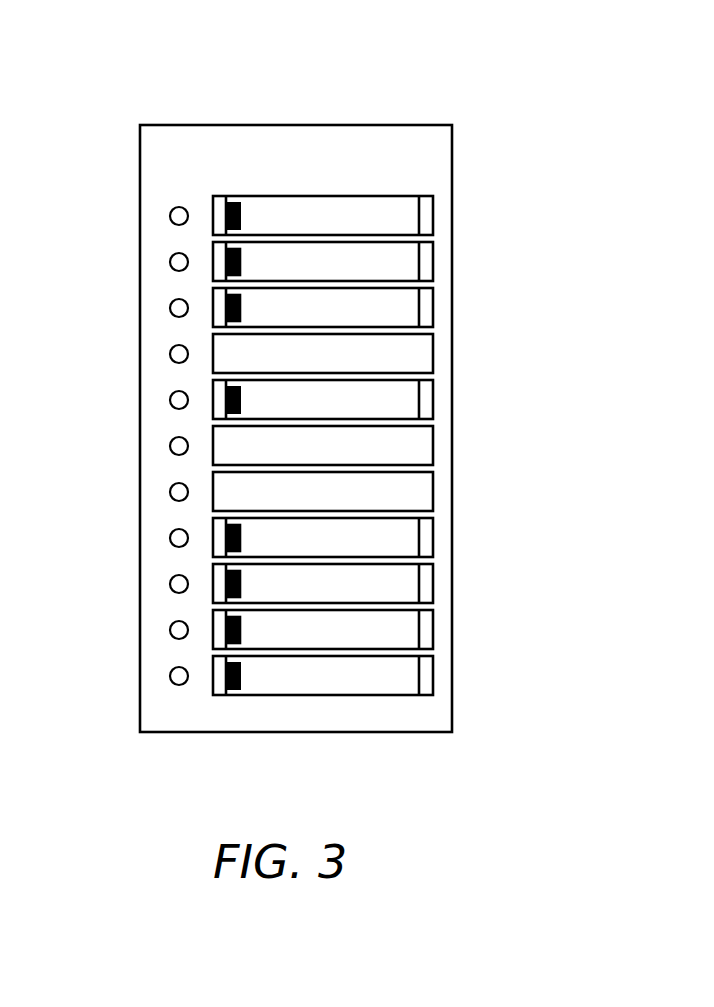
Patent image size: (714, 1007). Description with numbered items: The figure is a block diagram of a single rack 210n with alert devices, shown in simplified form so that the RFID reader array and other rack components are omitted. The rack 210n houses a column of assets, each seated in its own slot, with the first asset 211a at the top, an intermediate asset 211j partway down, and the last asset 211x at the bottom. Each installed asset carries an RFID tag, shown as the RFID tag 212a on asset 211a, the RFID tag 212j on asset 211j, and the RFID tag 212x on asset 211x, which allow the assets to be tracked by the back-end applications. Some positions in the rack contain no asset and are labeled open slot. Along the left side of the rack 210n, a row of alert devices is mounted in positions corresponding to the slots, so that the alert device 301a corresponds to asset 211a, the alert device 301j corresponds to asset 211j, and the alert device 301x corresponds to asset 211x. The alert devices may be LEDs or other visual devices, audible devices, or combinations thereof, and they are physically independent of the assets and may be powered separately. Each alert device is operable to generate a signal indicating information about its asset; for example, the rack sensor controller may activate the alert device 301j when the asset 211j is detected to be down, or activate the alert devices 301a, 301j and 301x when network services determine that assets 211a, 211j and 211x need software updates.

The rack 210n is at (328, 48).
The asset 211a is at (433, 213).
The asset 211j is at (433, 399).
The asset 211x is at (433, 672).
The RFID tag 212a is at (241, 213).
The RFID tag 212j is at (241, 397).
The RFID tag 212x is at (236, 694).
The alert device 301a is at (186, 207).
The alert device 301j is at (169, 400).
The alert device 301x is at (179, 686).
The element open slot is at (433, 489).